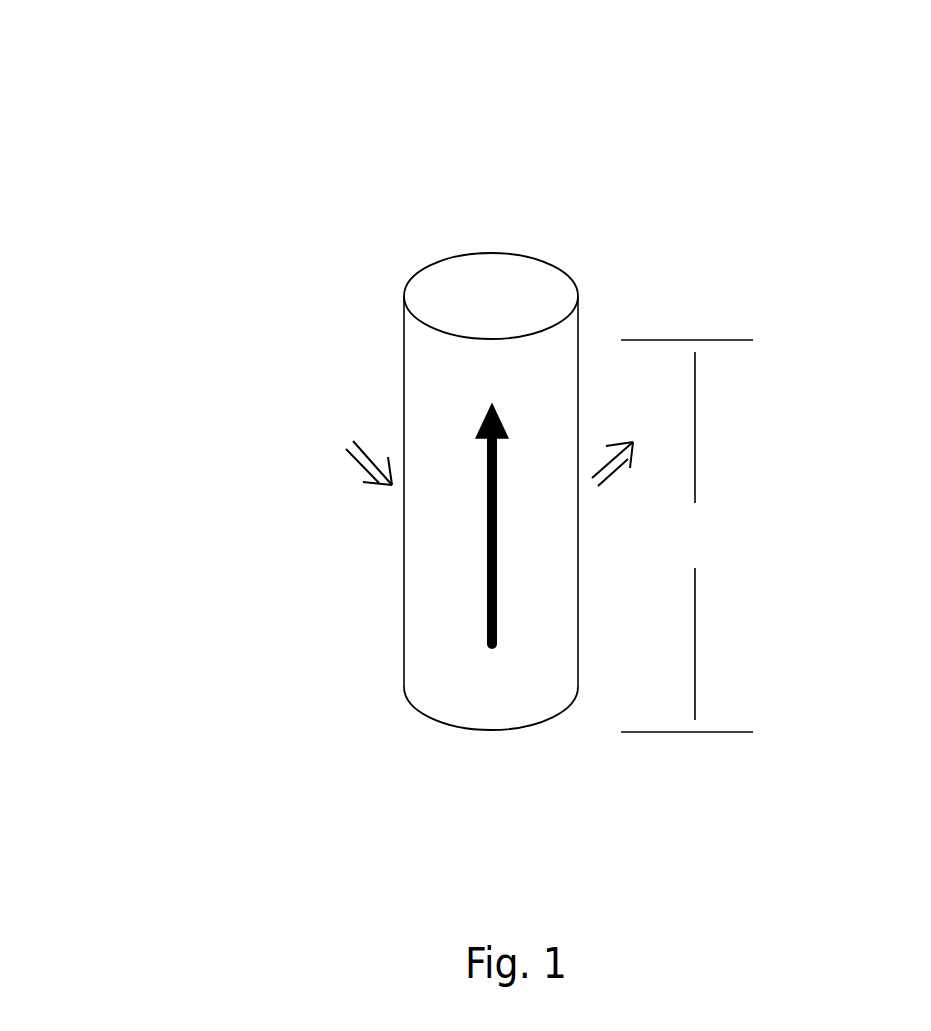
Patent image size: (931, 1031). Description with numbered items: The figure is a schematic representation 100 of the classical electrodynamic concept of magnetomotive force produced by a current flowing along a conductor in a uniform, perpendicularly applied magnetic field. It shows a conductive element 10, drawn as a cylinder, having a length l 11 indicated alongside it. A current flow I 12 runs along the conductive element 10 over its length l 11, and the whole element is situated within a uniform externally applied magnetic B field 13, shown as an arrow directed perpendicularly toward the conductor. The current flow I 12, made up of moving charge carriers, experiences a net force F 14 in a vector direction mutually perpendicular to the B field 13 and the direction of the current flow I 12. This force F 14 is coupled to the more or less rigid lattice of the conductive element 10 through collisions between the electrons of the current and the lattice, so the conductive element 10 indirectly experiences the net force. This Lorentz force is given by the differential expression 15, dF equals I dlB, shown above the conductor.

The system illustrating force on current-carrying conductor 100 is at (130, 54).
The conductive element 10 is at (534, 482).
The length l 11 is at (718, 536).
The current flow I 12 is at (417, 524).
The magnetic B field 13 is at (317, 464).
The force F 14 is at (715, 483).
The expression dF = I dlB 15 is at (570, 162).